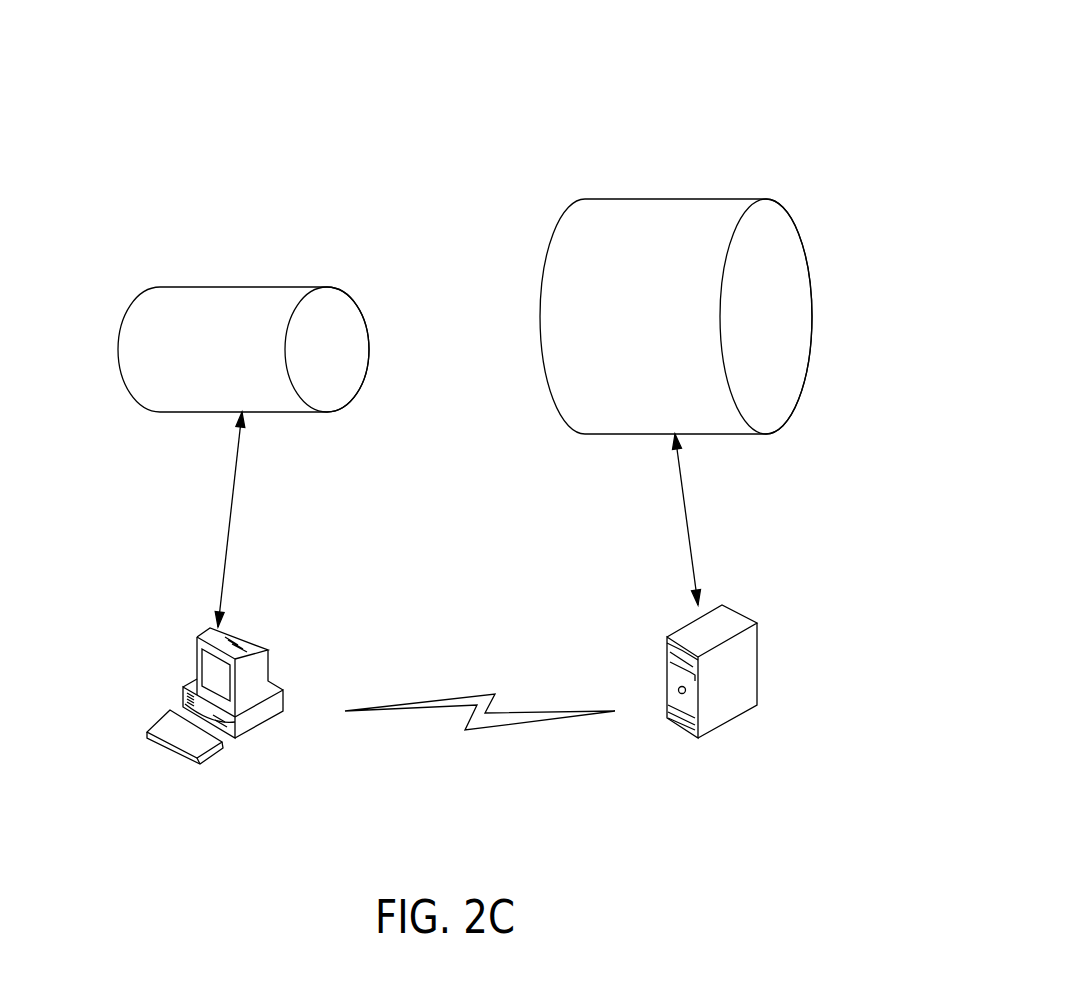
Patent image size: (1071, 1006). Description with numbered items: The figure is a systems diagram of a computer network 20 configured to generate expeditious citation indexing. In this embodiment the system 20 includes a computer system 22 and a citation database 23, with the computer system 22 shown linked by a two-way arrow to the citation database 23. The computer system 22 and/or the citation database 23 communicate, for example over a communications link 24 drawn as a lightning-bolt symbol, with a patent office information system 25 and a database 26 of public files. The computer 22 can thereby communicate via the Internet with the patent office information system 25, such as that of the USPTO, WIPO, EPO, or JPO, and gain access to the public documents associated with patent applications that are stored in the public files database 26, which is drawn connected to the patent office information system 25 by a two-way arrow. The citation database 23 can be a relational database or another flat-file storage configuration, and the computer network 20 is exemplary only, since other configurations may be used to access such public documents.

The computer network 20 is at (812, 84).
The computer system 22 is at (185, 758).
The citation database 23 is at (235, 287).
The communications link 24 is at (487, 732).
The patent office information system 25 is at (682, 733).
The database of public files 26 is at (667, 199).